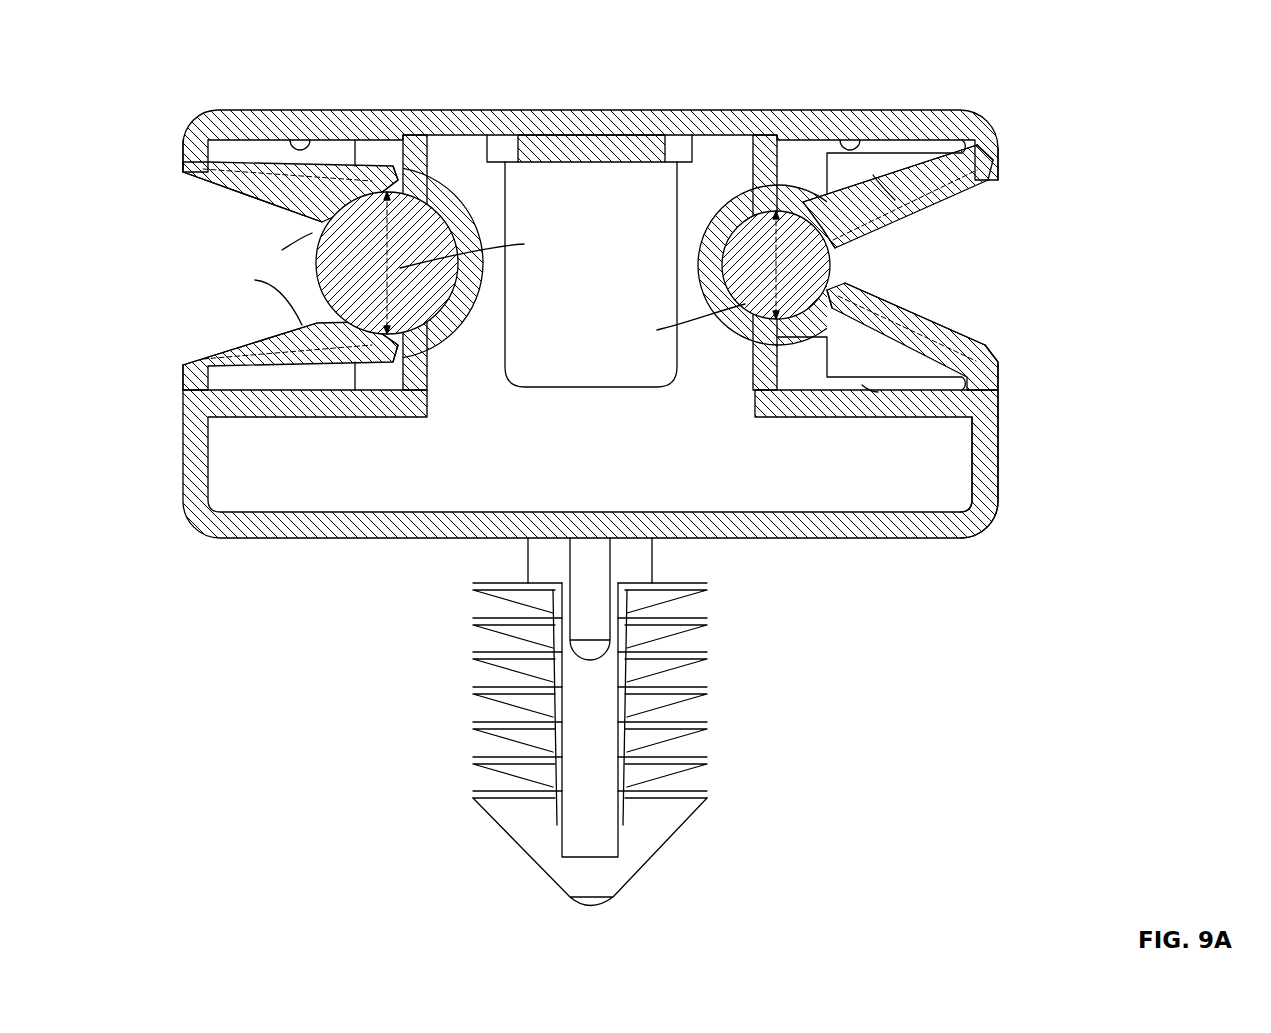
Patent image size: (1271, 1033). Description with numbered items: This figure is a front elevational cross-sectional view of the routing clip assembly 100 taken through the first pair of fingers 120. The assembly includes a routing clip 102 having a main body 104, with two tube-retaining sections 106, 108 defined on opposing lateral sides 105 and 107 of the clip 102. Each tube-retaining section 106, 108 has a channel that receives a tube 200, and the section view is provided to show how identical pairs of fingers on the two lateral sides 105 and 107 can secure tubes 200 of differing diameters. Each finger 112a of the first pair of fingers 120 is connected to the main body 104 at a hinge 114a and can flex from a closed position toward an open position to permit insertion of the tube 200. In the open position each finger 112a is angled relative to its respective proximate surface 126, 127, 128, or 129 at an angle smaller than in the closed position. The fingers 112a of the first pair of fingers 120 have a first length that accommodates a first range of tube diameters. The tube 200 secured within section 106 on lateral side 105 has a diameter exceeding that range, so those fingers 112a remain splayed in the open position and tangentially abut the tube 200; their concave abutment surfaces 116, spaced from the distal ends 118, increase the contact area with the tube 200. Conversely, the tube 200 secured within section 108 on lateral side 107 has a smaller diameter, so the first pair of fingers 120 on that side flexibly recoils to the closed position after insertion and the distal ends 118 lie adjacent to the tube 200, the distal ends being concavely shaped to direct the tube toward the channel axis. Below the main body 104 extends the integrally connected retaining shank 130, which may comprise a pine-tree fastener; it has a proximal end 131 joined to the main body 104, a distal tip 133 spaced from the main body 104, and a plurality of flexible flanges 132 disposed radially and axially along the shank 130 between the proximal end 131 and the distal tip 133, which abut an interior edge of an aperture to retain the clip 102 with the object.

The routing clip assembly 100 is at (1037, 64).
The routing clip 102 is at (683, 124).
The main body 104 is at (597, 134).
The lateral side 105 is at (183, 483).
The tube-retaining section 106 is at (271, 366).
The lateral side 107 is at (999, 466).
The tube-retaining section 108 is at (927, 366).
The finger 112a is at (280, 150).
The hinge 114a is at (185, 145).
The concave abutment surface 116 is at (362, 172).
The distal end 118 is at (383, 190).
The first pair of fingers 120 is at (268, 214).
The proximate surface 126 is at (302, 142).
The proximate surface 127 is at (282, 375).
The proximate surface 128 is at (850, 145).
The proximate surface 129 is at (865, 388).
The retaining shank 130 is at (647, 745).
The proximal end 131 is at (655, 542).
The flexible flanges 132 is at (707, 722).
The distal tip 133 is at (590, 905).
The tube 200 is at (380, 270).